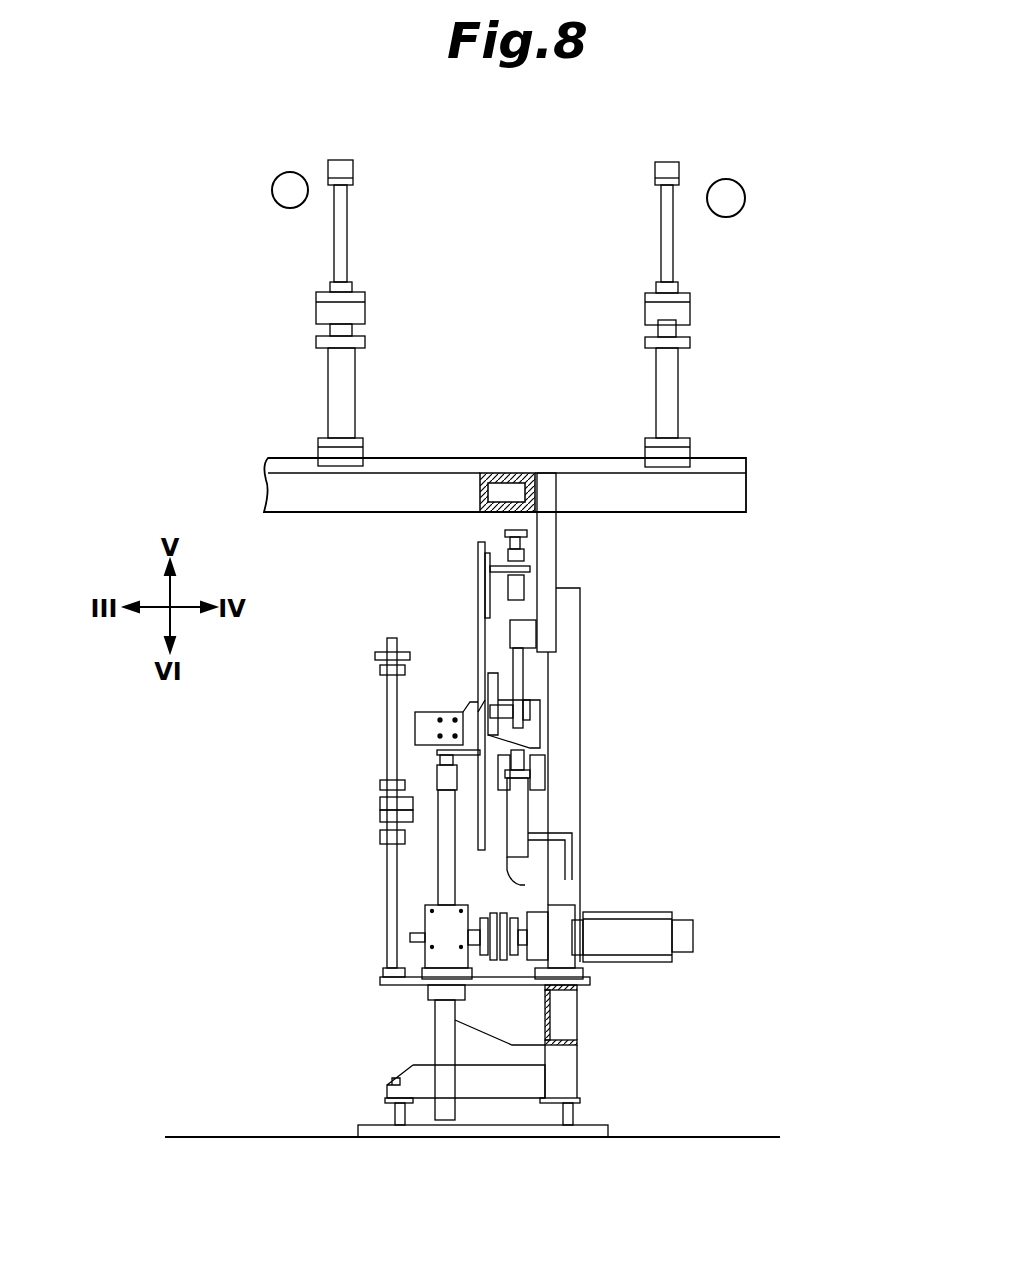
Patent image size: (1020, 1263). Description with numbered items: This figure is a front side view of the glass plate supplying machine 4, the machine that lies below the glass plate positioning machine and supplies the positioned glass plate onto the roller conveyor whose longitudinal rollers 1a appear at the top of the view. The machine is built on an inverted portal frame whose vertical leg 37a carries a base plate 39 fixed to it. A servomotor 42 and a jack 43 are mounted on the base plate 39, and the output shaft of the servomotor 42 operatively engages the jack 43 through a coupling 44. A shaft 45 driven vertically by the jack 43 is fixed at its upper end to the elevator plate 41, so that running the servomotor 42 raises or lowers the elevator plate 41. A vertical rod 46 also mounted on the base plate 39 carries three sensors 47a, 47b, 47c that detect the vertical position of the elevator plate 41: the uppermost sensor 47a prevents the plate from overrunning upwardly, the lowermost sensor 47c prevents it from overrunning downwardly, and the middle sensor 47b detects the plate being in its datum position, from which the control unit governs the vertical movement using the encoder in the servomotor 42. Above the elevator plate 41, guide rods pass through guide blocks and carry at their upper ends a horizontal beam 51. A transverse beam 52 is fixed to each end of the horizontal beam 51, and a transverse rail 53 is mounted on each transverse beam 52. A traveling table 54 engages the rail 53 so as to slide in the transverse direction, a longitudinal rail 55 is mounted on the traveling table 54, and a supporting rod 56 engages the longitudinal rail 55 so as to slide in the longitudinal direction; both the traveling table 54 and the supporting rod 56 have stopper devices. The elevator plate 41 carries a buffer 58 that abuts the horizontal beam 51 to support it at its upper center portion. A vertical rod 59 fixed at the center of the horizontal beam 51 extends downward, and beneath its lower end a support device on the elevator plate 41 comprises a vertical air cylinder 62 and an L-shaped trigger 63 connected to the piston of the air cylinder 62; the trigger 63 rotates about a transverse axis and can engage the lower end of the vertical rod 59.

The longitudinal roller 1a is at (286, 186).
The glass plate supplying machine 4 is at (598, 666).
The vertical leg 37a is at (565, 726).
The base plate 39 is at (498, 982).
The elevator plate 41 is at (478, 632).
The servomotor 42 is at (640, 930).
The jack 43 is at (443, 945).
The coupling 44 is at (513, 910).
The shaft 45 is at (440, 850).
The vertical rod 46 is at (390, 916).
The sensor 47a is at (376, 656).
The sensor 47b is at (380, 803).
The sensor 47c is at (380, 817).
The horizontal beam 51 is at (486, 498).
The transverse beam 52 is at (705, 496).
The transverse rail 53 is at (538, 470).
The traveling table 54 is at (340, 386).
The longitudinal rail 55 is at (343, 328).
The supporting rod 56 is at (341, 246).
The buffer 58 is at (516, 588).
The vertical rod 59 is at (548, 553).
The vertical air cylinder 62 is at (520, 826).
The L-shaped trigger 63 is at (517, 690).